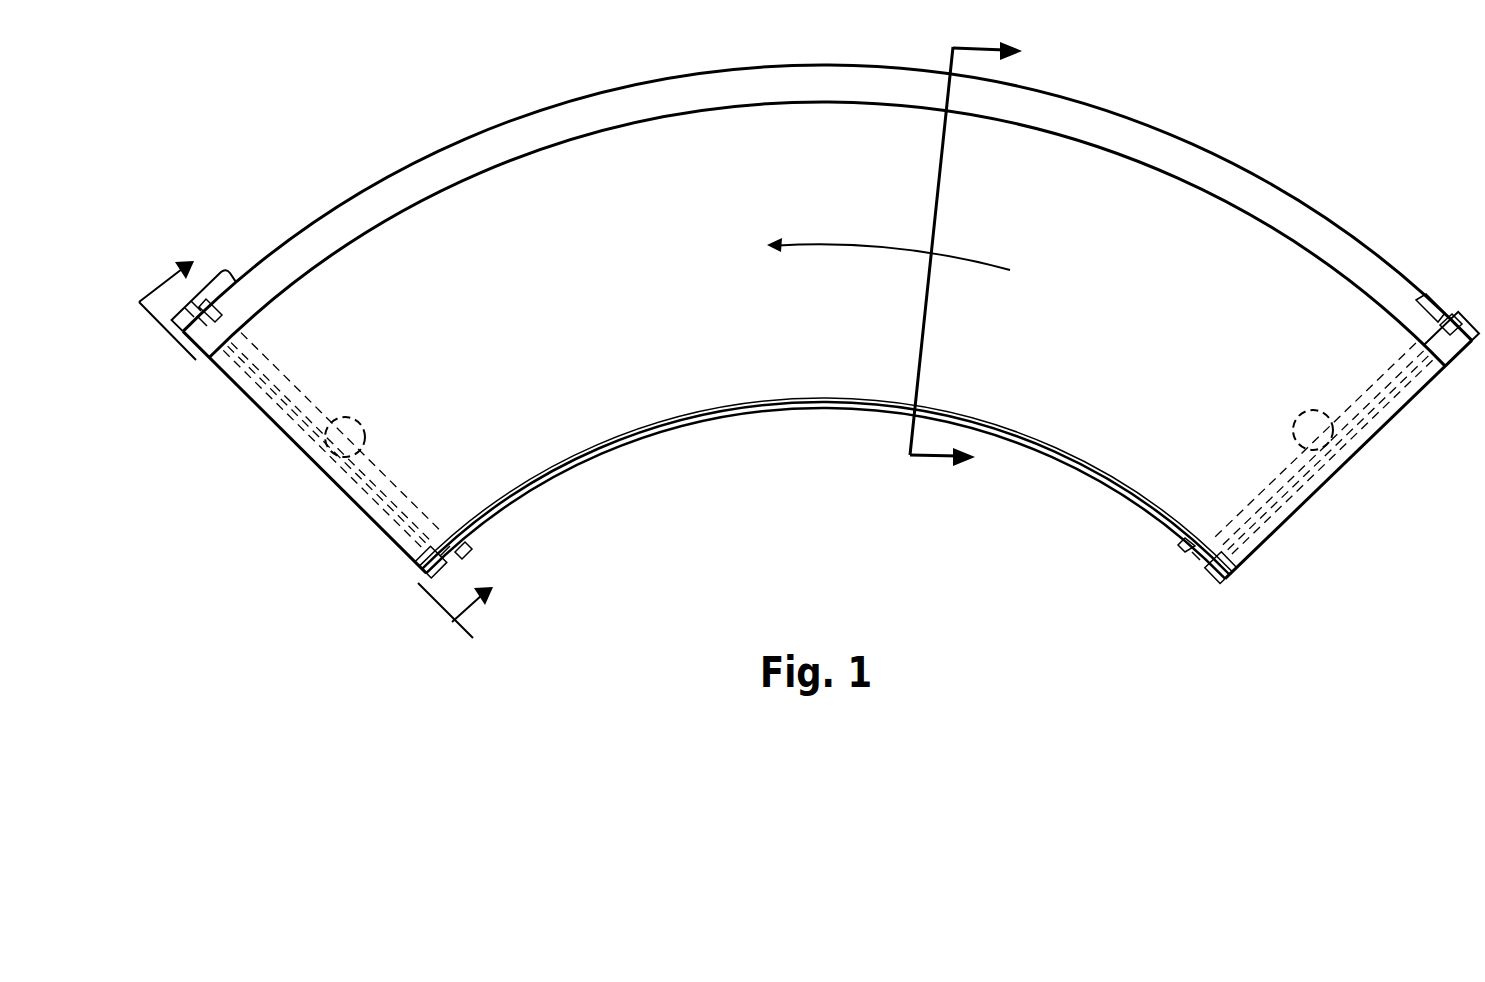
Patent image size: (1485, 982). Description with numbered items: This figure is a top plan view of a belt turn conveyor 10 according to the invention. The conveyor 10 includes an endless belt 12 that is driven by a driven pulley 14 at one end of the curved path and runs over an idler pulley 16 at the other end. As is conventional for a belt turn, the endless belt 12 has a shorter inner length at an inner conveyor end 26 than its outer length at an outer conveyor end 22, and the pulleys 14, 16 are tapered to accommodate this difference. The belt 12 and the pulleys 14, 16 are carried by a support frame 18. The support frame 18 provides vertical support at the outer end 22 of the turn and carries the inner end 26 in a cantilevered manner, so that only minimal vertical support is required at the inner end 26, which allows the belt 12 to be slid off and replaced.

The belt turn conveyor 10 is at (1207, 140).
The endless belt 12 is at (1184, 342).
The driven pulley 14 is at (326, 442).
The idler pulley 16 is at (1330, 443).
The support frame 18 is at (546, 105).
The outer conveyor end 22 is at (1338, 220).
The inner conveyor end 26 is at (1115, 486).